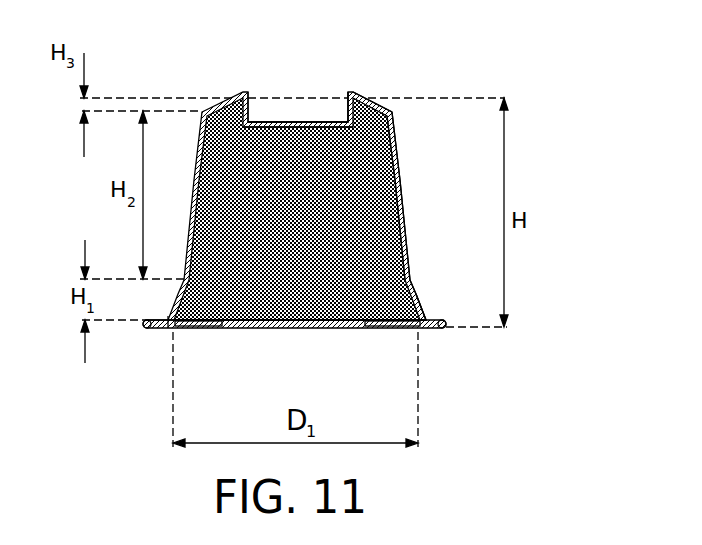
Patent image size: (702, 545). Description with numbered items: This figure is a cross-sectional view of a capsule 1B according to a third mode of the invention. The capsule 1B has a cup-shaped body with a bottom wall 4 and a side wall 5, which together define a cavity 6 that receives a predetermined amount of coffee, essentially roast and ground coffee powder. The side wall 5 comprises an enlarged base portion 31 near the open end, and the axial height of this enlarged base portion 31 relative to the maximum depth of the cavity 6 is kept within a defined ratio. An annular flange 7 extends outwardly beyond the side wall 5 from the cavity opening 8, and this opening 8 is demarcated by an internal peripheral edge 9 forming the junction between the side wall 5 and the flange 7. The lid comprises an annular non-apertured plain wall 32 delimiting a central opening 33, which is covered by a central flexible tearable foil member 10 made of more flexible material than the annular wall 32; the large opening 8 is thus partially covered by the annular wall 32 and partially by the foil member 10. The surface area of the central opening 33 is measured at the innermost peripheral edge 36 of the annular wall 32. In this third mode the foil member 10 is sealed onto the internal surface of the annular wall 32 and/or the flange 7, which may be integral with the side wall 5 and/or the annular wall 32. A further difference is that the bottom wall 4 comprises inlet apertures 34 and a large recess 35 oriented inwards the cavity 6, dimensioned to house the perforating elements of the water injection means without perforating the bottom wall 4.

The capsule 1B is at (417, 66).
The bottom wall 4 is at (363, 86).
The recess 35 is at (257, 98).
The inlet apertures 34 is at (295, 119).
The cavity 6 is at (372, 203).
The side wall 5 is at (424, 244).
The enlarged base portion 31 is at (420, 302).
The flange 7 is at (450, 338).
The internal peripheral edge 9 is at (188, 328).
The flexible tearable foil member 10 is at (227, 328).
The cavity opening 8 is at (265, 306).
The central opening 33 is at (308, 316).
The innermost peripheral edge 36 is at (368, 330).
The annular wall 32 is at (397, 332).